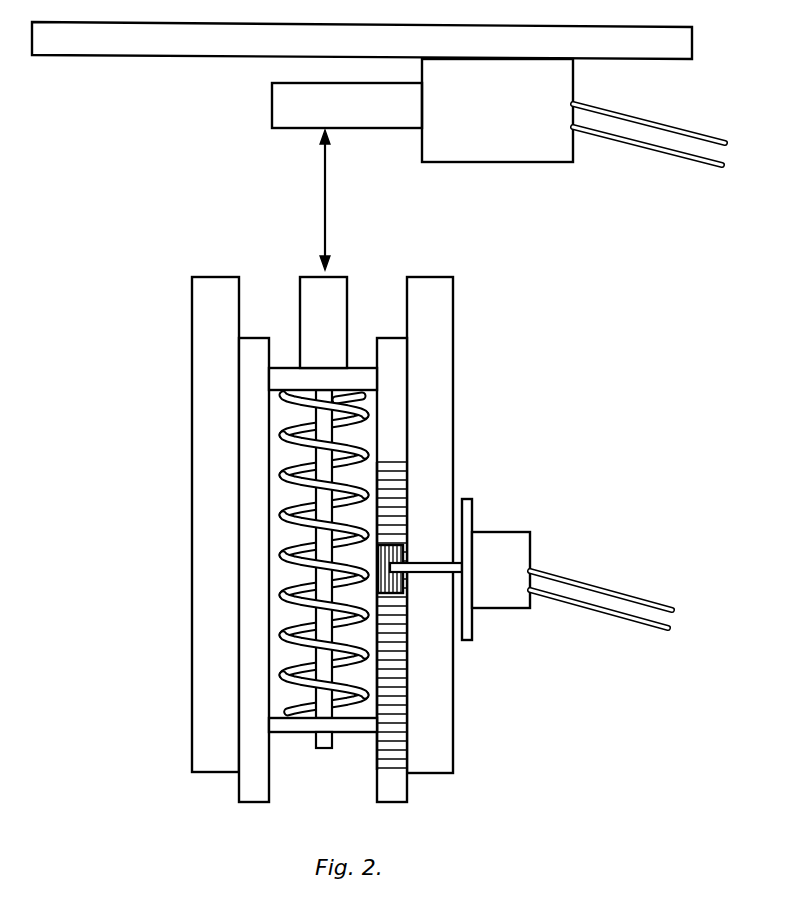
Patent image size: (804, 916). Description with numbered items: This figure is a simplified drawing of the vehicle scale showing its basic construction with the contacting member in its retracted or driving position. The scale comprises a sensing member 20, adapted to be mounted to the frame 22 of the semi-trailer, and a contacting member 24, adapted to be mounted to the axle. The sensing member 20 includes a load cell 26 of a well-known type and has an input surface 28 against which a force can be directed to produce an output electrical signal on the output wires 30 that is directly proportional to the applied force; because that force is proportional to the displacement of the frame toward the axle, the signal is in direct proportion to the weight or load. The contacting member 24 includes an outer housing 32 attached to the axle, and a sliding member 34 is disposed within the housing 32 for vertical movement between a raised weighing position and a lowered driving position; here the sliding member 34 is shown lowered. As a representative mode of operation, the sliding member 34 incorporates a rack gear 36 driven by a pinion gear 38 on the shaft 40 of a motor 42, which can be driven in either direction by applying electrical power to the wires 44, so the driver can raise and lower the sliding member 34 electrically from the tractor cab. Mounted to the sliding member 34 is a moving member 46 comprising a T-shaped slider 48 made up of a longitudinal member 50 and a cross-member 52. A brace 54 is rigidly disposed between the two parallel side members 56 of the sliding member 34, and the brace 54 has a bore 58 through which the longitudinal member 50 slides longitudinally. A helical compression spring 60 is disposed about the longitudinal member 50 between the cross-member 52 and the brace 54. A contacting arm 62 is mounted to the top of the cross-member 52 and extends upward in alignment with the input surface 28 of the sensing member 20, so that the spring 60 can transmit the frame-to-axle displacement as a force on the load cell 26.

The sensing member 20 is at (527, 184).
The frame 22 is at (148, 40).
The contacting member 24 is at (550, 495).
The load cell 26 is at (493, 163).
The input surface 28 is at (292, 132).
The output wires 30 is at (660, 118).
The outer housing 32 is at (193, 315).
The sliding member 34 is at (277, 306).
The rack gear 36 is at (405, 497).
The pinion gear 38 is at (407, 590).
The shaft 40 is at (430, 562).
The motor 42 is at (508, 562).
The wires 44 is at (620, 586).
The moving member 46 is at (373, 298).
The T-shaped slider 48 is at (326, 554).
The longitudinal member 50 is at (300, 455).
The cross-member 52 is at (280, 376).
The brace 54 is at (275, 722).
The side members 56 is at (395, 390).
The bore 58 is at (318, 748).
The helical compression spring 60 is at (362, 462).
The contacting arm 62 is at (330, 275).